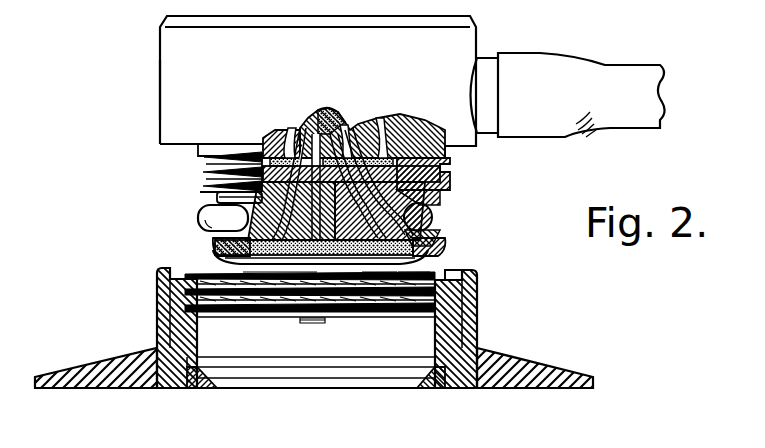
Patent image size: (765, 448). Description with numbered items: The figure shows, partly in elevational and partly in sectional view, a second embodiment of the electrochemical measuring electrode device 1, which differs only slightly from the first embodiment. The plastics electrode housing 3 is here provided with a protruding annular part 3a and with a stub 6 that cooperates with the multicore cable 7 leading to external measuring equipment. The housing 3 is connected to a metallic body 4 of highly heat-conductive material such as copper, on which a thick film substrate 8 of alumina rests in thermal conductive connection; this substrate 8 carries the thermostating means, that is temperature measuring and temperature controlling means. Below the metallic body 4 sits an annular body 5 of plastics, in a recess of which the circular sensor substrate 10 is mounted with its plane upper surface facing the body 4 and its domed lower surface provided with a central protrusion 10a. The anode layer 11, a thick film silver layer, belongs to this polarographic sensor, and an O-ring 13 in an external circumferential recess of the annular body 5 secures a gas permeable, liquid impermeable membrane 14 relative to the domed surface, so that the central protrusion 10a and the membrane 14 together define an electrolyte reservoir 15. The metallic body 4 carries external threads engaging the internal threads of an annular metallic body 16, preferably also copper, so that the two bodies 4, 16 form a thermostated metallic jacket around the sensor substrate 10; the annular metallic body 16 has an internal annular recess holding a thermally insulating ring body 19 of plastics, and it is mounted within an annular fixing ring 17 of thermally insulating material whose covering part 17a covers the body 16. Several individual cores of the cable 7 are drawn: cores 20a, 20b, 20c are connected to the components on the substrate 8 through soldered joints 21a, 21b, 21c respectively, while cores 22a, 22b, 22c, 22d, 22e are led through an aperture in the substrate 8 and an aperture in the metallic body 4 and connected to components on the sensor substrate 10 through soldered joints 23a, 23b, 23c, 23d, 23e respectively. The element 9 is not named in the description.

The measuring electrode device 1 is at (160, 40).
The electrode housing 3 is at (165, 83).
The protruding annular part 3a is at (455, 148).
The metallic body 4 is at (450, 176).
The annular body 5 is at (410, 248).
The stub 6 is at (482, 57).
The multicore cable 7 is at (535, 53).
The thick film substrate 8 is at (265, 140).
The cable core 9 is at (305, 122).
The sensor substrate 10 is at (218, 243).
The central protrusion 10a is at (330, 265).
The anode layer 11 is at (395, 264).
The O-ring 13 is at (198, 215).
The membrane 14 is at (225, 253).
The electrolyte reservoir 15 is at (355, 290).
The annular metallic body 16 is at (160, 318).
The annular fixing ring 17 is at (108, 370).
The covering part 17a is at (478, 283).
The thermally insulating ring body 19 is at (198, 390).
The core 20a is at (288, 128).
The core 20b is at (362, 115).
The core 20c is at (400, 122).
The soldered joint 21a is at (272, 130).
The soldered joint 21b is at (340, 125).
The soldered joint 21c is at (378, 120).
The core 22a is at (218, 197).
The core 22b is at (195, 160).
The core 22c is at (433, 220).
The core 22d is at (433, 236).
The core 22e is at (415, 200).
The soldered joint 23a is at (248, 265).
The soldered joint 23b is at (280, 265).
The soldered joint 23c is at (312, 265).
The soldered joint 23d is at (360, 265).
The soldered joint 23e is at (390, 265).